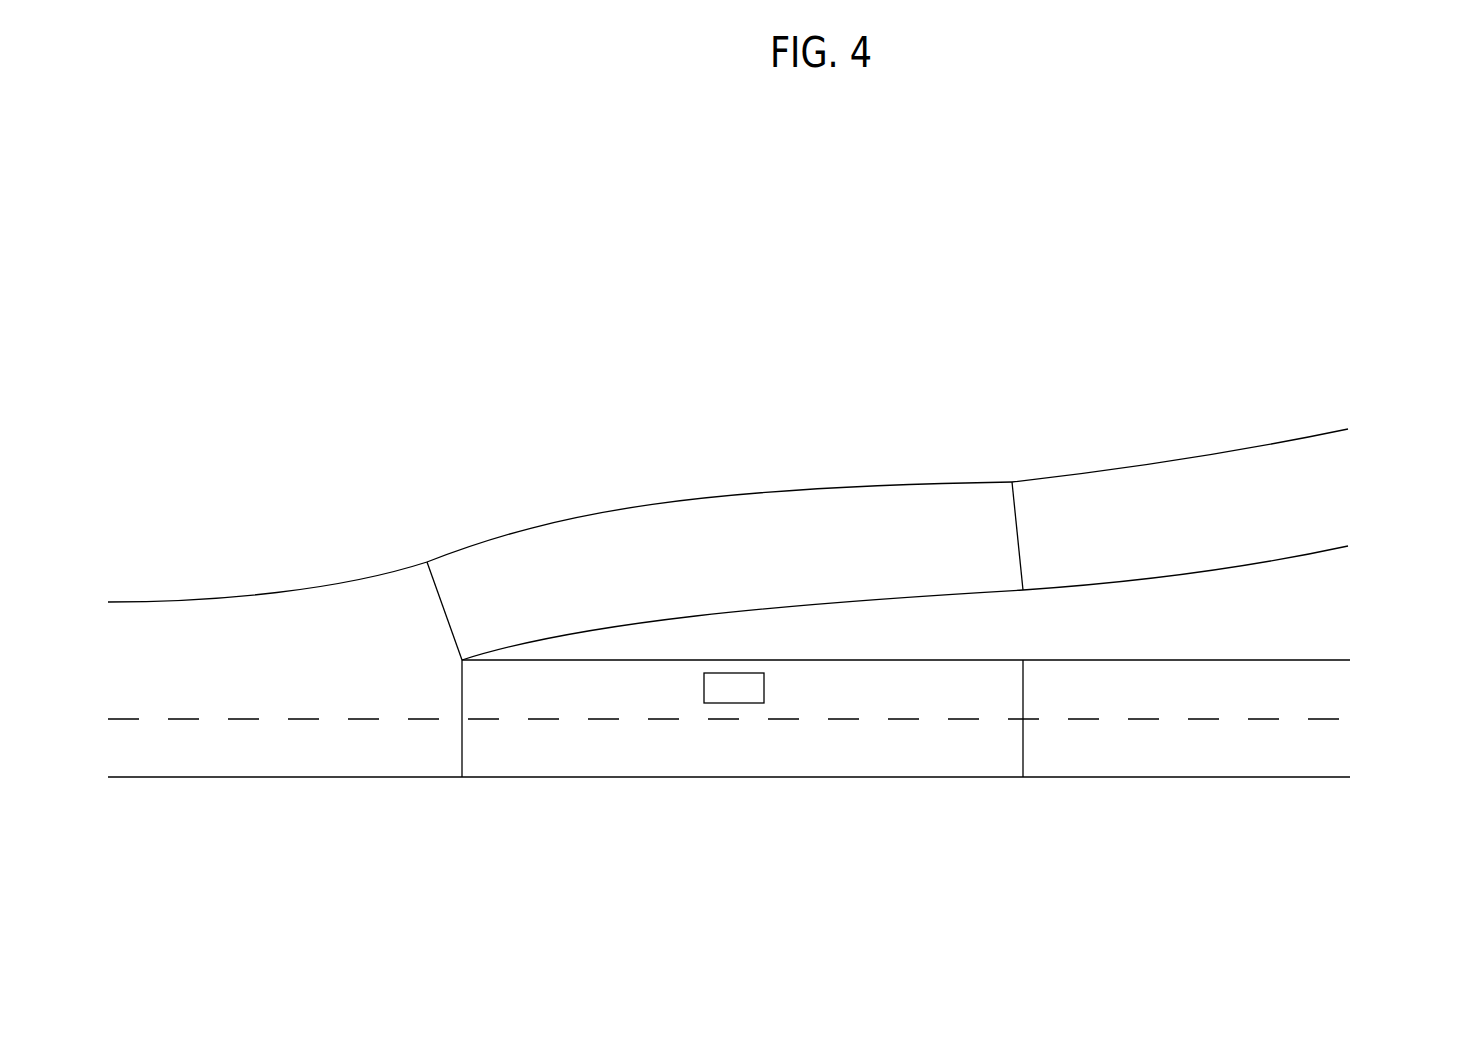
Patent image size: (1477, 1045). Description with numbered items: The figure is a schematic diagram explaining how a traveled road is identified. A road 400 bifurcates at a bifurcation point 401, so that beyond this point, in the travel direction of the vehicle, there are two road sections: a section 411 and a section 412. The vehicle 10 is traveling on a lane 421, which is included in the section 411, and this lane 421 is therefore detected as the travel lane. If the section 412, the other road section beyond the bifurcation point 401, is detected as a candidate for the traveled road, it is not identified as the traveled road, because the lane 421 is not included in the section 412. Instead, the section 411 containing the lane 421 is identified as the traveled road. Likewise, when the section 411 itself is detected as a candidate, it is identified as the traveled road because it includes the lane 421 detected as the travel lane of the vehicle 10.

The vehicle 10 is at (732, 685).
The road 400 is at (1377, 415).
The bifurcation point 401 is at (437, 858).
The section 411 is at (1022, 823).
The section 412 is at (1005, 413).
The lane 421 is at (974, 680).